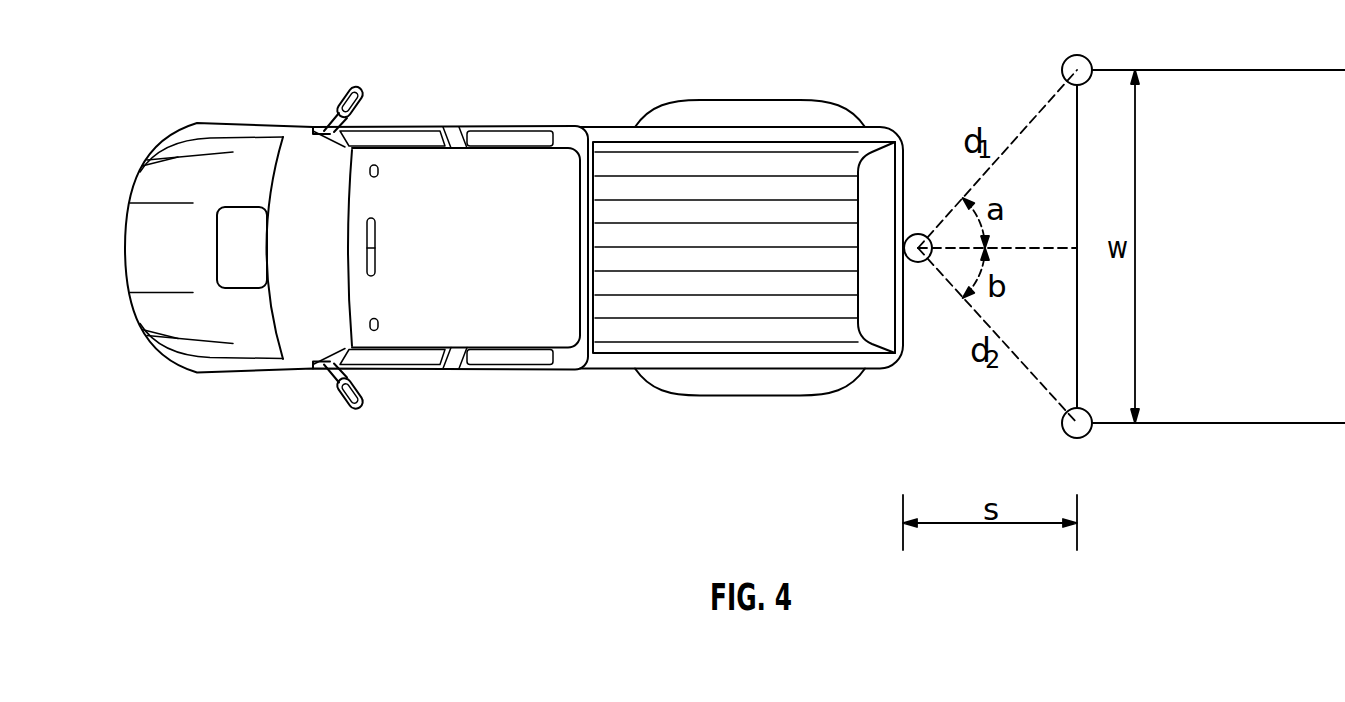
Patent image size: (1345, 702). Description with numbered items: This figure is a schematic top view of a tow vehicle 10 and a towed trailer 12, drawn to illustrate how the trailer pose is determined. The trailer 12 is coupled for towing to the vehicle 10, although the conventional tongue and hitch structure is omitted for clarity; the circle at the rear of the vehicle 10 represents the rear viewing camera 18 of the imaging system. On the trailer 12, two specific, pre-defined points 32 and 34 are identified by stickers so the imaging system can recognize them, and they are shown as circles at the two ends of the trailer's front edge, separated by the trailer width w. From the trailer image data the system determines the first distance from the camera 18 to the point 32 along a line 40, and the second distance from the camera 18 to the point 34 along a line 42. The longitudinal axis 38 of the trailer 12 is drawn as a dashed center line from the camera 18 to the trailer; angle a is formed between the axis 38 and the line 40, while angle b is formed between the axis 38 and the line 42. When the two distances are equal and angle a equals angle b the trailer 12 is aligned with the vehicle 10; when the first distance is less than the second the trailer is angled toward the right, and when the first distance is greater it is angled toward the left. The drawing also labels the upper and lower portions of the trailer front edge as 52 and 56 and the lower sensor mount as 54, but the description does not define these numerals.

The vehicle 10 is at (514, 126).
The towed trailer 12 is at (1262, 424).
The rear viewing camera 18 is at (921, 234).
The first pre-defined point 32 is at (1083, 56).
The second pre-defined point 34 is at (1083, 437).
The longitudinal axis of the trailer 38 is at (1027, 248).
The line from the camera to the first point 40 is at (1023, 127).
The line from the camera to the second point 42 is at (1037, 380).
The first trailer width segment 52 is at (1077, 115).
The second trailer sensor mount 54 is at (1069, 404).
The trailer front line segment 56 is at (1077, 287).